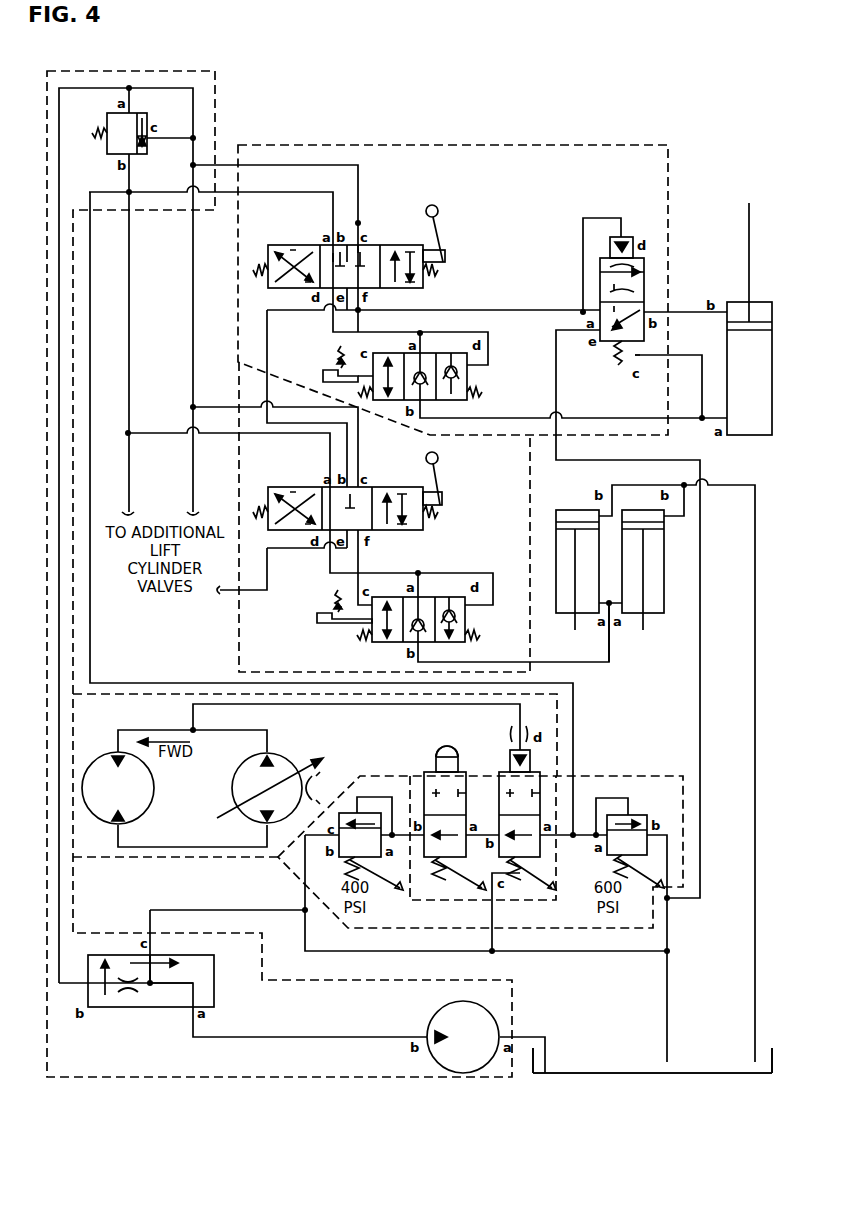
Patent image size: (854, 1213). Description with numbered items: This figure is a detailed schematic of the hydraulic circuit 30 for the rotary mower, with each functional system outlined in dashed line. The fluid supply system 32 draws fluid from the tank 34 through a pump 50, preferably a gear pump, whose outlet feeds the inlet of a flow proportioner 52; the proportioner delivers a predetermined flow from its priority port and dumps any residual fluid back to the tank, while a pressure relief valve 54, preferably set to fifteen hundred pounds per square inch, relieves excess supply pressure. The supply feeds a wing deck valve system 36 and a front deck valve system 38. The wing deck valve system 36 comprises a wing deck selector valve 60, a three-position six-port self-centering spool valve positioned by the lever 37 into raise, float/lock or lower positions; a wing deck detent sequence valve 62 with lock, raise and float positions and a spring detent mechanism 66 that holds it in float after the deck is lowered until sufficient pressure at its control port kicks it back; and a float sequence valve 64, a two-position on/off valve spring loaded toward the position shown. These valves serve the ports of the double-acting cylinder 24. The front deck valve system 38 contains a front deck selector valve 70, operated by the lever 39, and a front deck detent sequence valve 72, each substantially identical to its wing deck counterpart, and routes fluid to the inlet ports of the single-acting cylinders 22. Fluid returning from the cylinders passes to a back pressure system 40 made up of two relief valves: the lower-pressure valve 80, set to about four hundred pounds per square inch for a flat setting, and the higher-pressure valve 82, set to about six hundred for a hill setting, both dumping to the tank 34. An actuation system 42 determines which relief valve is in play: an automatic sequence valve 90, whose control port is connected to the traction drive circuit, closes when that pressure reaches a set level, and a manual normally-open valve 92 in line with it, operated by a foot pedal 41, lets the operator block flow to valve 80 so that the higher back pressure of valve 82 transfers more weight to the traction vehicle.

The single-acting cylinders 22 is at (578, 509).
The double-acting cylinder 24 is at (735, 300).
The hydraulic circuit 30 is at (368, 106).
The fluid supply system 32 is at (216, 146).
The tank 34 is at (612, 1072).
The wing deck valve system 36 is at (648, 142).
The lever 37 is at (427, 205).
The front deck valve system 38 is at (238, 614).
The lever 39 is at (425, 455).
The back pressure system 40 is at (662, 773).
The foot pedal 41 is at (436, 765).
The actuation system 42 is at (561, 714).
The pump 50 is at (432, 1019).
The flow proportioner 52 is at (165, 1010).
The pressure relief valve 54 is at (130, 112).
The wing deck selector valve 60 is at (370, 224).
The wing deck detent sequence valve 62 is at (478, 385).
The float sequence valve 64 is at (575, 256).
The spring detent mechanism 66 is at (318, 372).
The front deck selector valve 70 is at (373, 482).
The front deck detent sequence valve 72 is at (350, 624).
The pressure relief valve 80 is at (340, 856).
The pressure relief valve 82 is at (652, 817).
The automatic sequence valve 90 is at (500, 772).
The manual normally-open on/off valve 92 is at (452, 748).